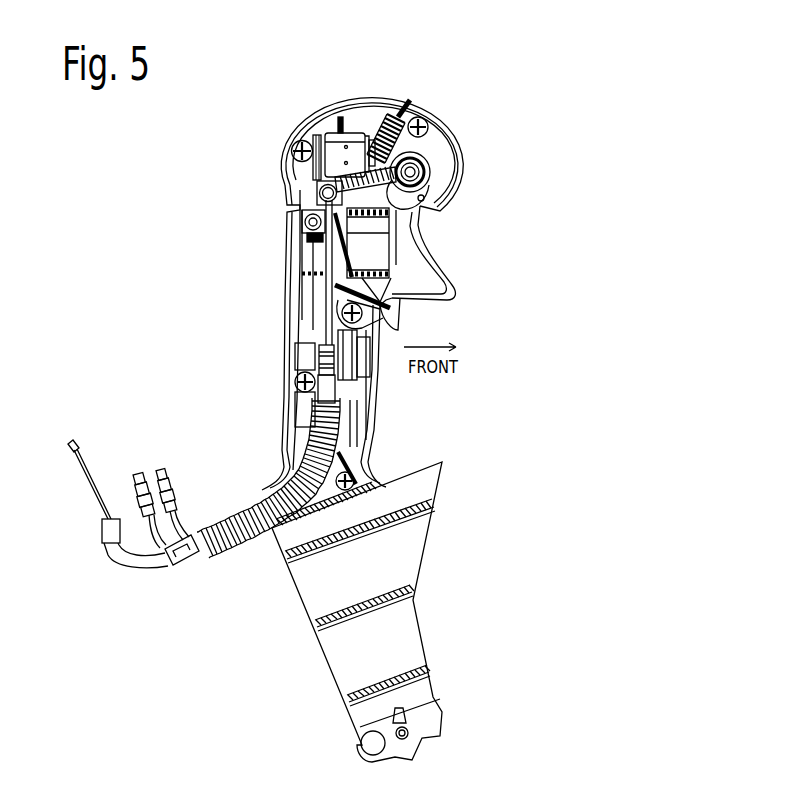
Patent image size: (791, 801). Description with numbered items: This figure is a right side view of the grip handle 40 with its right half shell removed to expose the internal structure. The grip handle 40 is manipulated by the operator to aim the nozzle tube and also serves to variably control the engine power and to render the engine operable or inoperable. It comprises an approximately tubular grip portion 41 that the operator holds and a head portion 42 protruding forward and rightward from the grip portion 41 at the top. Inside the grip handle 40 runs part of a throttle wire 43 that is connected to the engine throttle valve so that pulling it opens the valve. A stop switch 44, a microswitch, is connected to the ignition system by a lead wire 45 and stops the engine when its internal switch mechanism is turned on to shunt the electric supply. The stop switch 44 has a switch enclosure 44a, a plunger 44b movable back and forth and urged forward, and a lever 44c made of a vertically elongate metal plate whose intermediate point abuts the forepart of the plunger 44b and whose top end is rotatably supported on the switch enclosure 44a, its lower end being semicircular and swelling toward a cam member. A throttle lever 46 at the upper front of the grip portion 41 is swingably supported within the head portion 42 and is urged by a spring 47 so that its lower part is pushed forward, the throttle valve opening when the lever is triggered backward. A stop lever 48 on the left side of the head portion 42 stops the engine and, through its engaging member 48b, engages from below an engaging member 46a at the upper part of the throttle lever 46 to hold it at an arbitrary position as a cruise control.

The grip handle 40 is at (505, 102).
The grip portion 41 is at (293, 292).
The head portion 42 is at (293, 164).
The throttle wire 43 is at (300, 391).
The stop switch 44 is at (314, 126).
The switch enclosure 44a is at (345, 155).
The plunger 44b is at (362, 140).
The lever 44c is at (370, 138).
The lead wire 45 is at (310, 248).
The throttle lever 46 is at (418, 253).
The engaging member 46a is at (428, 122).
The spring 47 is at (401, 108).
The stop lever 48 is at (447, 172).
The engaging member 48b is at (423, 199).